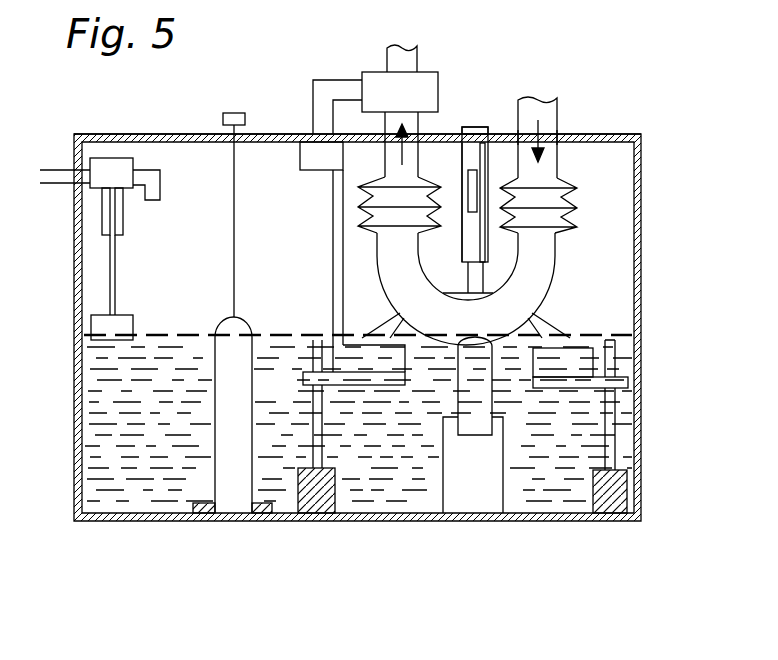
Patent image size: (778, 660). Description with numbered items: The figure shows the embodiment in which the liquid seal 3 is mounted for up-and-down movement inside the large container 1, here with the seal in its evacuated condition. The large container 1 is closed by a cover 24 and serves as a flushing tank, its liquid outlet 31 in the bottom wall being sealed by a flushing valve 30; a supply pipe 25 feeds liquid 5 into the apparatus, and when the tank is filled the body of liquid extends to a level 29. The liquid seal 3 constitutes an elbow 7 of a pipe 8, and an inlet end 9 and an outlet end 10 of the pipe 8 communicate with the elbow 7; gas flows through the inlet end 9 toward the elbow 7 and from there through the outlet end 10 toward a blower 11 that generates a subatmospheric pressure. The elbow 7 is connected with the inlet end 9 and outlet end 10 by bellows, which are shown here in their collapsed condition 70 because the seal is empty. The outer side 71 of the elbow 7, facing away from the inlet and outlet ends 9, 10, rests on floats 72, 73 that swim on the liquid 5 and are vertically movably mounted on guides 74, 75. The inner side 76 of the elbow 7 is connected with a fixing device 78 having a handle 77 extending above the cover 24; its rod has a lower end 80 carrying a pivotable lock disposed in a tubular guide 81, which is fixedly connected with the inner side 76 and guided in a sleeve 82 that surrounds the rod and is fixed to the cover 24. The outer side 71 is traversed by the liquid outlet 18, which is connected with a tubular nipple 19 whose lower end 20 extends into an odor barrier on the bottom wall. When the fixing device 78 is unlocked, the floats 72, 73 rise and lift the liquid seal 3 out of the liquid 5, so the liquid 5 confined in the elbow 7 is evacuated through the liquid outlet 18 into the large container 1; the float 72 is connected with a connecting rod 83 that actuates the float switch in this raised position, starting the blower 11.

The large container 1 is at (628, 455).
The liquid seal 3 is at (525, 307).
The liquid 5 is at (100, 466).
The elbow 7 is at (473, 318).
The pipe 8 is at (557, 133).
The inlet end 9 is at (545, 110).
The outlet end 10 is at (398, 55).
The blower 11 is at (375, 82).
The liquid outlet 18 is at (470, 345).
The tubular nipple 19 is at (460, 382).
The lower end 20 is at (470, 438).
The cover 24 is at (120, 133).
The supply pipe 25 is at (160, 185).
The level 29 is at (163, 333).
The flushing valve 30 is at (190, 515).
The liquid outlet 31 is at (238, 506).
The collapsed condition of bellows 70 is at (555, 195).
The outer side 71 is at (520, 343).
The float 72 is at (363, 378).
The float 73 is at (573, 380).
The guide 74 is at (318, 406).
The guide 75 is at (612, 425).
The inner side 76 is at (493, 290).
The handle 77 is at (474, 127).
The fixing device 78 is at (462, 160).
The lower end 80 is at (468, 210).
The tubular guide 81 is at (477, 230).
The sleeve 82 is at (489, 162).
The connecting rod 83 is at (333, 277).